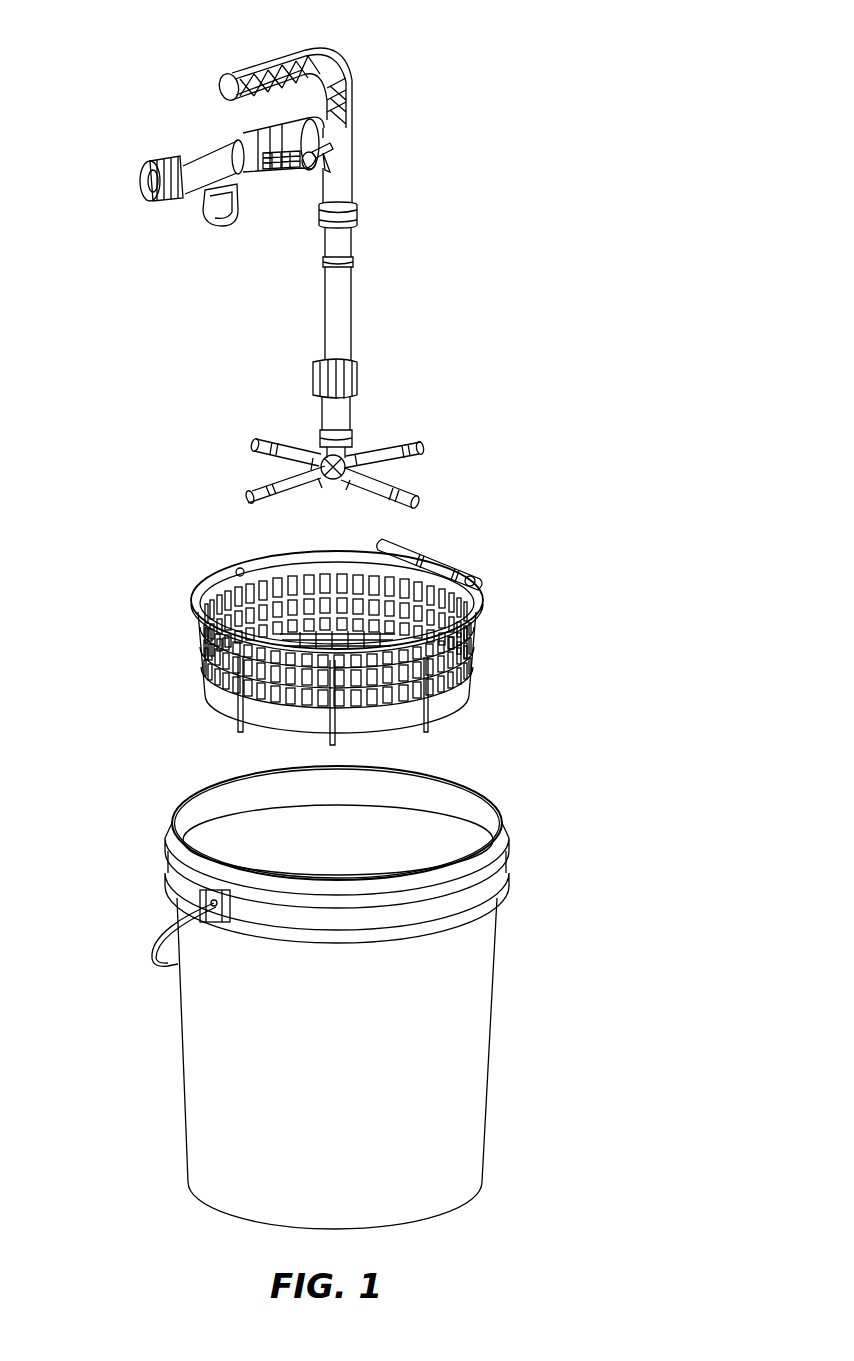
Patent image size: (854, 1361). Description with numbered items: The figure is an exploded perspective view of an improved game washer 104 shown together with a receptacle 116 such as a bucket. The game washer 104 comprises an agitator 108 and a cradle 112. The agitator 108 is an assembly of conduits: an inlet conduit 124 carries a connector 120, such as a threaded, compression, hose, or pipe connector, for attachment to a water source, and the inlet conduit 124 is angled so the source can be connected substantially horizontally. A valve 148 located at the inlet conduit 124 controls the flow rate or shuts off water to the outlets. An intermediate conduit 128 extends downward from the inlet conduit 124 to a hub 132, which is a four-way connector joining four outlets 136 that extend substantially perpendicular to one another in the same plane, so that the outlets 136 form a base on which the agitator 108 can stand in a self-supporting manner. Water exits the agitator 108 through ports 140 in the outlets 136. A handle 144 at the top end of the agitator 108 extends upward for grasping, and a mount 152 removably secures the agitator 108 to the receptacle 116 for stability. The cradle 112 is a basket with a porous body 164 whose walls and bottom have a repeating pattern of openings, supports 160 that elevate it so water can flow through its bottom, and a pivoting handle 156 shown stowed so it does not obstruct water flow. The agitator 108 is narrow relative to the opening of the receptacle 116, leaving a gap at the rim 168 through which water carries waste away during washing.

The improved game washer 104 is at (100, 519).
The agitator 108 is at (404, 298).
The cradle 112 is at (486, 658).
The receptacle 116 is at (504, 1028).
The connector 120 is at (160, 162).
The inlet conduit 124 is at (388, 128).
The intermediate conduit 128 is at (322, 312).
The hub 132 is at (352, 462).
The outlets 136 is at (252, 445).
The ports 140 is at (272, 436).
The handle 144 is at (292, 55).
The valve 148 is at (313, 170).
The mount 152 is at (215, 228).
The handle 156 is at (447, 566).
The support 160 is at (253, 731).
The body 164 is at (197, 586).
The rim 168 is at (458, 772).